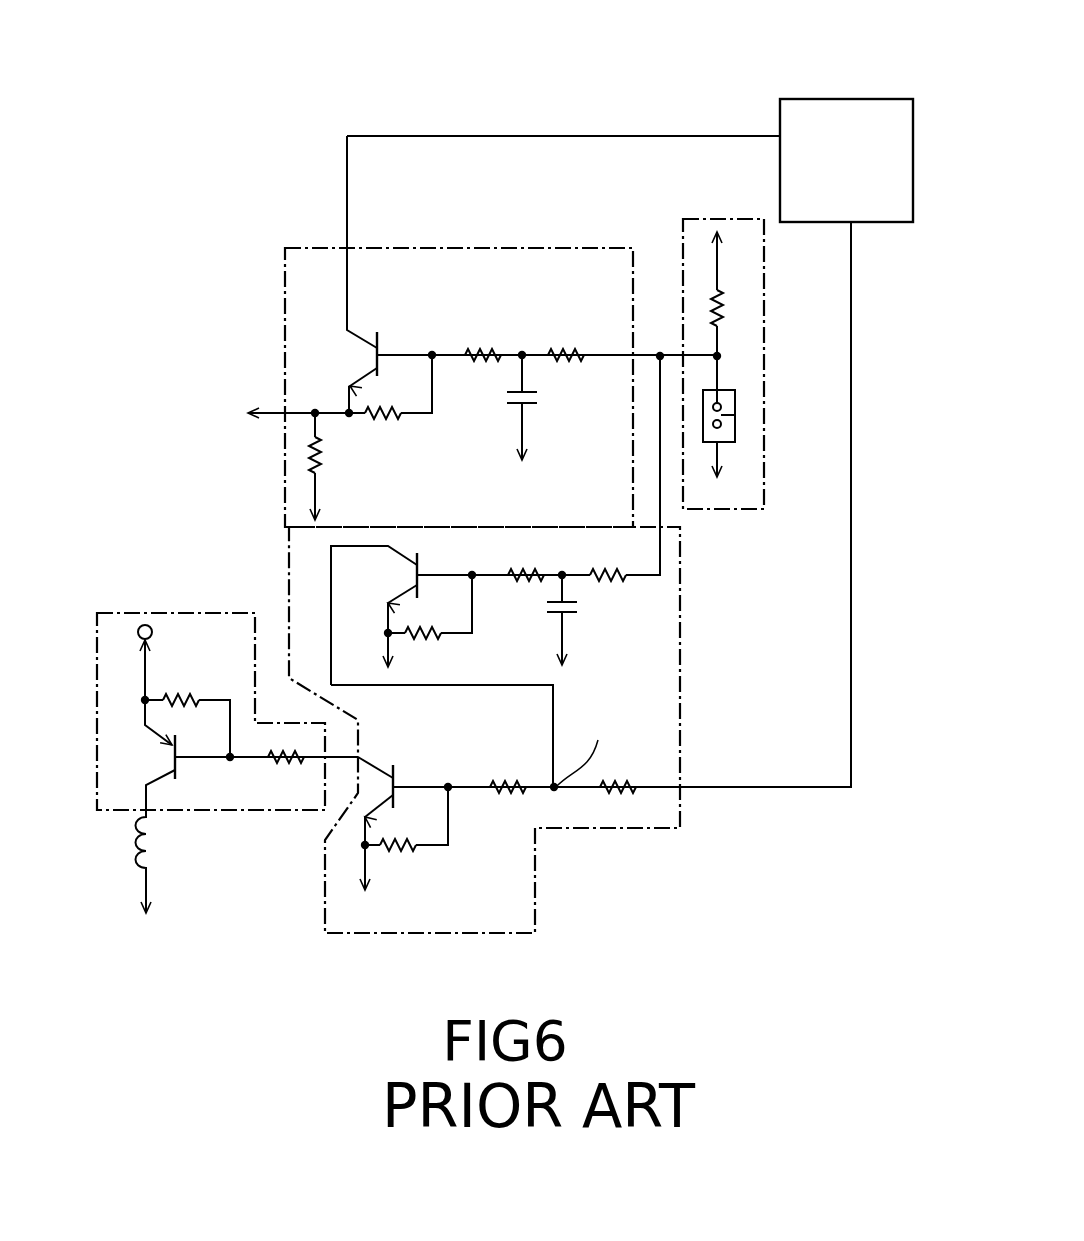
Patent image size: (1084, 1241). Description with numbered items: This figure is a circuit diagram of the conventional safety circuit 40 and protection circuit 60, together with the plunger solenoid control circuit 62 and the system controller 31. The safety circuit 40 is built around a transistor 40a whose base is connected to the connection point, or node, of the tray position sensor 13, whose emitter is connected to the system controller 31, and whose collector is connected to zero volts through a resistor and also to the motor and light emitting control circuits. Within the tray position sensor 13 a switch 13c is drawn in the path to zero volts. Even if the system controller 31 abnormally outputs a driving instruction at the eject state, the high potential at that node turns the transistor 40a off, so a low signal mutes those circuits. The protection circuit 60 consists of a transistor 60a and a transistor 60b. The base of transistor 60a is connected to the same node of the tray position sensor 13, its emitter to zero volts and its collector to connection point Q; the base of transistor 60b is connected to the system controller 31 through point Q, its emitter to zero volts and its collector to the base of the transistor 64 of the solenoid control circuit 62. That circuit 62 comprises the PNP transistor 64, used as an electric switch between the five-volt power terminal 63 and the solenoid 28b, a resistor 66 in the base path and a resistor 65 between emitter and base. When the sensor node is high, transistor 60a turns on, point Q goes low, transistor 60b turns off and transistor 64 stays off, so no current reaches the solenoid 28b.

The system controller 31 is at (840, 99).
The safety circuit 40 is at (443, 248).
The transistor 40a is at (370, 332).
The tray position sensor 13 is at (752, 509).
The switch 13c is at (735, 430).
The plunger solenoid control circuit 62 is at (128, 613).
The power terminal 63 is at (152, 632).
The resistor 65 is at (185, 692).
The transistor 64 is at (175, 780).
The resistor 66 is at (288, 765).
The solenoid 28b is at (137, 842).
The protection circuit 60 is at (650, 672).
The transistor 60a is at (410, 548).
The transistor 60b is at (383, 762).